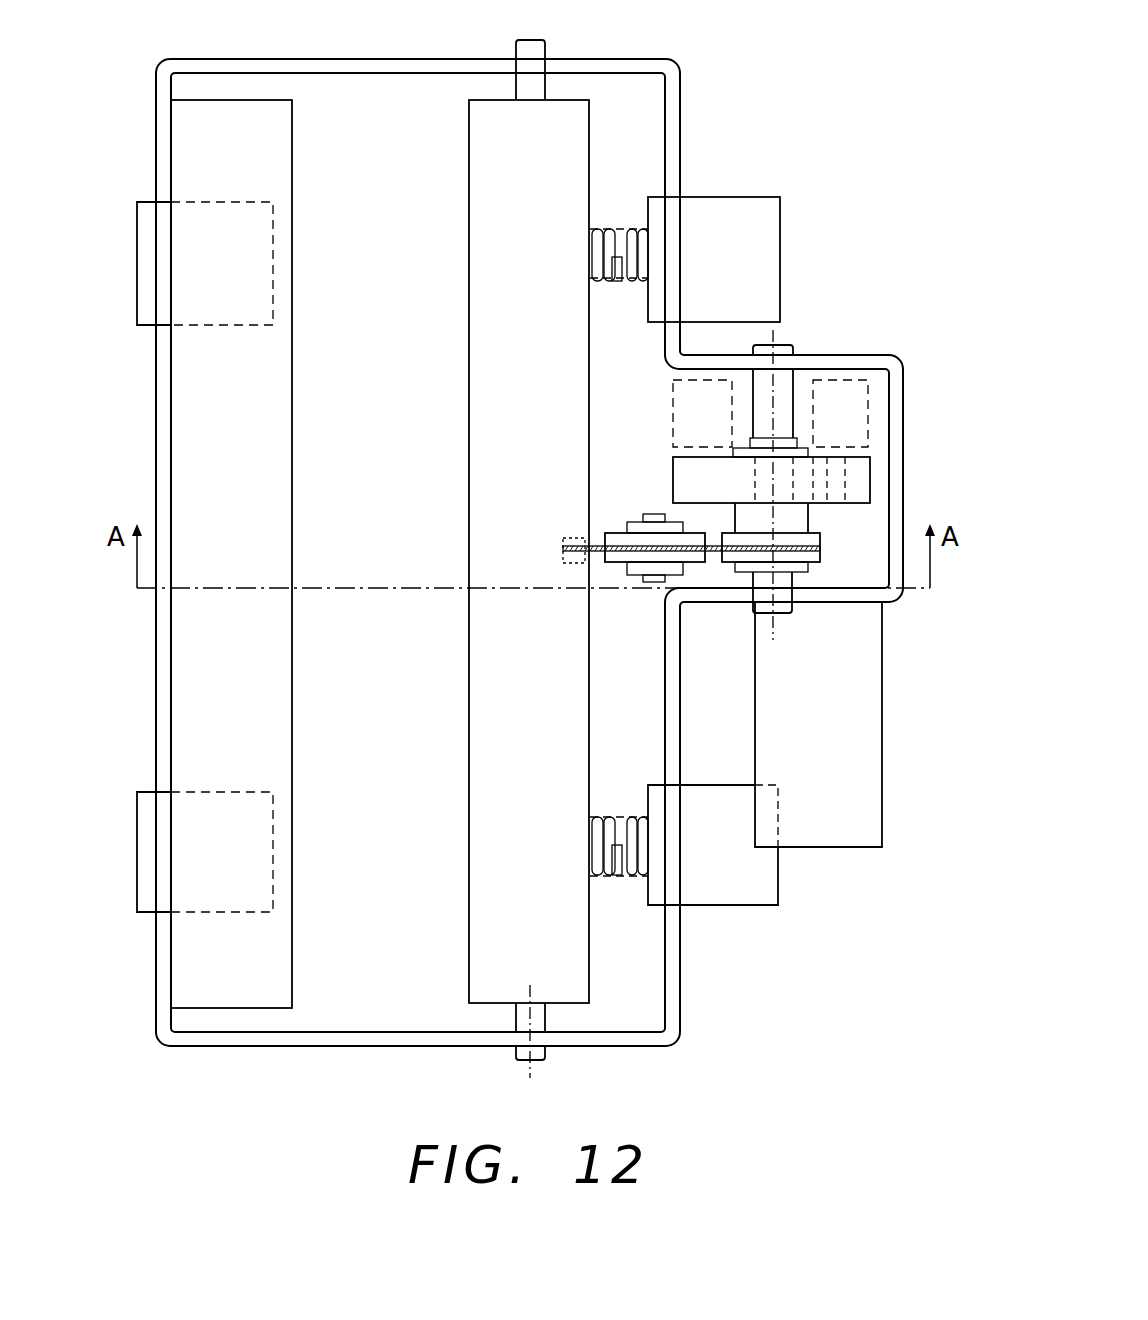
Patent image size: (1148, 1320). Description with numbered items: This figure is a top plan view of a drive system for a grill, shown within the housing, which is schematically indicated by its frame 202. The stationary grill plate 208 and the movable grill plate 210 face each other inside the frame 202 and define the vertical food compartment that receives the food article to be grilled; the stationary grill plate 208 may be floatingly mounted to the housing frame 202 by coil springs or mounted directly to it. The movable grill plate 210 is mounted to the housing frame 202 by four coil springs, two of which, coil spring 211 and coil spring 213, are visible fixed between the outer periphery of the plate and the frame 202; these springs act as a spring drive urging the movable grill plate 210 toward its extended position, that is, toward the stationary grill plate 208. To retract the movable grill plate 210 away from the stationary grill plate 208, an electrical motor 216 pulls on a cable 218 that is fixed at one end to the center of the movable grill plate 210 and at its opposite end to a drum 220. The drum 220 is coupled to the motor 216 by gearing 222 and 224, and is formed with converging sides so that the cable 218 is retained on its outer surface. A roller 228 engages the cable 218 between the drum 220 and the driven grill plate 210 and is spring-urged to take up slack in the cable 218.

The housing frame 202 is at (680, 127).
The stationary grill plate 208 is at (207, 108).
The movable grill plate 210 is at (489, 100).
The coil spring 211 is at (594, 252).
The coil spring 213 is at (598, 848).
The electrical motor 216 is at (856, 835).
The cable 218 is at (597, 537).
The drum 220 is at (812, 532).
The gearing 222 is at (838, 492).
The gearing 224 is at (835, 390).
The roller 228 is at (615, 557).